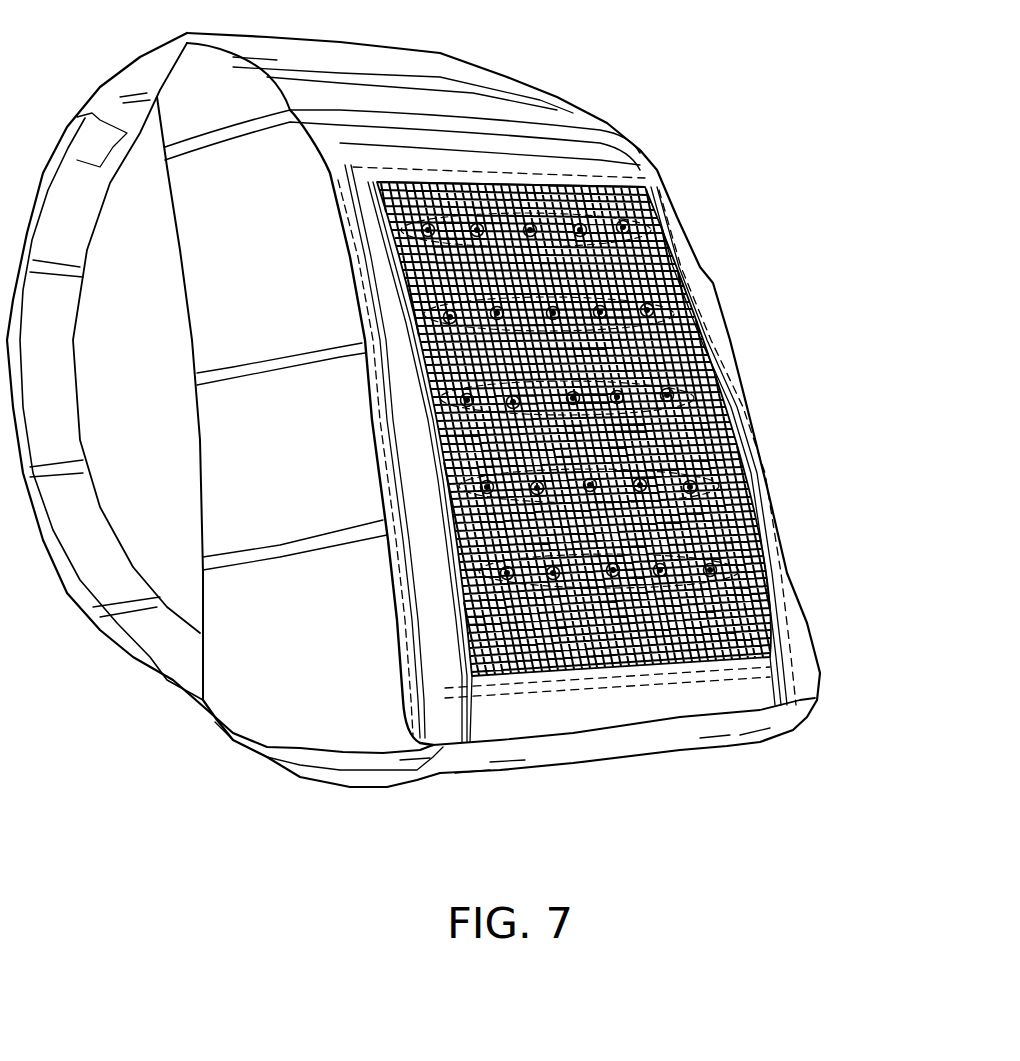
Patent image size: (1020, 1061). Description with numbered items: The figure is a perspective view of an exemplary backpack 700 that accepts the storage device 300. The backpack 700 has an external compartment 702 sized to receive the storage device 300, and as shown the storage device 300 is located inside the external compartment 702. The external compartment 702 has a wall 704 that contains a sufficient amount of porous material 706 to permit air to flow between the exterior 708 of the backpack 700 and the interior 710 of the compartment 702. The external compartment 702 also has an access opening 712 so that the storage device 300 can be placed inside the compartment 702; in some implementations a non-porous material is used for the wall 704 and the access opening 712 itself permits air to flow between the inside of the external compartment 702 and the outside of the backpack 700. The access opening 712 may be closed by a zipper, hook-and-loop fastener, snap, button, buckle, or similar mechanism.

The backpack 700 is at (258, 826).
The access opening 712 is at (583, 128).
The external compartment 702 is at (665, 257).
The wall 704 is at (690, 323).
The porous material 706 is at (712, 364).
The interior 710 is at (733, 517).
The exterior 708 is at (803, 657).
The storage device 300 is at (728, 419).